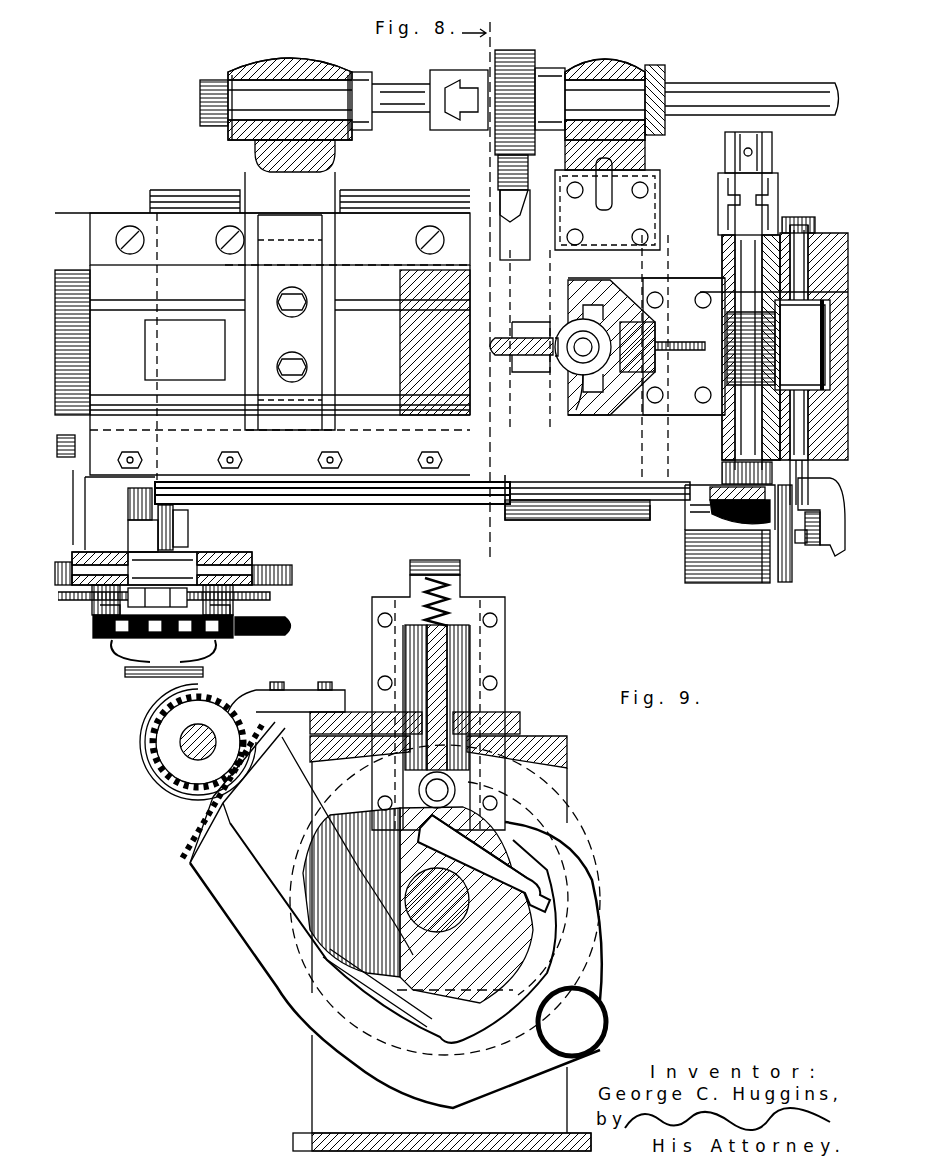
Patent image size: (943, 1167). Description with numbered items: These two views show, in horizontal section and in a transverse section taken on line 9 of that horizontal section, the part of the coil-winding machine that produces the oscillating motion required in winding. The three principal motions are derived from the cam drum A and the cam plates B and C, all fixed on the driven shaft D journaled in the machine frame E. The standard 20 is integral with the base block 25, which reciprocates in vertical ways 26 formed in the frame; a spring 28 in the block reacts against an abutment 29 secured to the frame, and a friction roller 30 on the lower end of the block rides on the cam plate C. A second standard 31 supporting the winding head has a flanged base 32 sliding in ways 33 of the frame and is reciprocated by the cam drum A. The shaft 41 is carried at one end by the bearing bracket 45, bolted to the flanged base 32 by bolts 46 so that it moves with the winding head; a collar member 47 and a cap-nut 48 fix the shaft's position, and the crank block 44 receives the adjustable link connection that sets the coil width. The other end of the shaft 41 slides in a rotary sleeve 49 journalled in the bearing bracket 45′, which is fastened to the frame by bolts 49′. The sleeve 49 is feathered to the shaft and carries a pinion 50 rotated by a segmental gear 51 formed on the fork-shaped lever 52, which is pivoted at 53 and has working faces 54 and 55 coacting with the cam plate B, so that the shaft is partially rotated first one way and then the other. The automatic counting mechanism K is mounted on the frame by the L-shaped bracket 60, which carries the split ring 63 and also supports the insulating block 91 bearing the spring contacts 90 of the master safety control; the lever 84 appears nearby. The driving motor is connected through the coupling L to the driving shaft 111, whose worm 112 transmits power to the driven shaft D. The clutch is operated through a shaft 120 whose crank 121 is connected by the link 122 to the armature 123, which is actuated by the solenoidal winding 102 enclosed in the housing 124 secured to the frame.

In FIG. 8, the section line 9— 9 is at (482, 283).
In FIG. 8, the standard 20 is at (500, 336).
In FIG. 9, the standard 20 is at (450, 644).
In FIG. 8, the base block 25 is at (606, 362).
In FIG. 9, the base block 25 is at (466, 666).
In FIG. 8, the vertical ways 26 is at (588, 316).
In FIG. 9, the vertical ways 26 is at (506, 606).
In FIG. 8, the spring 28 is at (580, 412).
In FIG. 9, the spring 28 is at (455, 590).
In FIG. 9, the abutment 29 is at (462, 568).
In FIG. 9, the friction roller 30 is at (418, 783).
In FIG. 8, the standard 31 is at (402, 297).
In FIG. 8, the flanged base 32 is at (309, 301).
In FIG. 8, the ways 33 is at (130, 296).
In FIG. 9, the ways 33 is at (520, 722).
In FIG. 8, the shaft 41 is at (388, 108).
In FIG. 9, the shaft 41 is at (192, 746).
In FIG. 8, the crank block 44 is at (456, 70).
In FIG. 8, the bearing bracket 45 is at (296, 52).
In FIG. 8, the bearing bracket 45′ is at (600, 56).
In FIG. 9, the bearing bracket 45′ is at (270, 690).
In FIG. 8, the bolts 46 is at (296, 368).
In FIG. 8, the collar member 47 is at (359, 72).
In FIG. 8, the cap-nut 48 is at (205, 96).
In FIG. 8, the rotary sleeve 49 is at (616, 96).
In FIG. 8, the bolts 49′ is at (645, 237).
In FIG. 9, the bolts 49′ is at (316, 684).
In FIG. 8, the pinion 50 is at (516, 52).
In FIG. 9, the pinion 50 is at (170, 735).
In FIG. 8, the segmental gear 51 is at (500, 178).
In FIG. 9, the segmental gear 51 is at (183, 862).
In FIG. 8, the fork-shaped lever 52 is at (515, 208).
In FIG. 9, the fork-shaped lever 52 is at (274, 996).
In FIG. 8, the pivot 53 is at (516, 524).
In FIG. 9, the pivot 53 is at (572, 1022).
In FIG. 9, the working face 54 is at (396, 1003).
In FIG. 9, the working face 55 is at (504, 830).
In FIG. 8, the L-shaped bracket 60 is at (80, 535).
In FIG. 8, the split ring 63 is at (172, 595).
In FIG. 8, the lever 84 is at (287, 618).
In FIG. 8, the spring contacts 90 is at (118, 655).
In FIG. 8, the insulating block 91 is at (94, 642).
In FIG. 8, the solenoidal winding 102 is at (730, 498).
In FIG. 8, the driving shaft 111 is at (745, 258).
In FIG. 8, the worm 112 is at (736, 332).
In FIG. 8, the shaft 120 is at (826, 232).
In FIG. 8, the crank 121 is at (823, 546).
In FIG. 8, the link 122 is at (801, 545).
In FIG. 8, the armature 123 is at (785, 585).
In FIG. 8, the housing 124 is at (730, 585).
In FIG. 8, the cam drum A is at (186, 195).
In FIG. 9, the cam drum A is at (570, 830).
In FIG. 9, the cam plate B is at (508, 898).
In FIG. 9, the cam plate C is at (366, 822).
In FIG. 9, the driven shaft D is at (456, 924).
In FIG. 8, the machine frame E is at (120, 218).
In FIG. 9, the machine frame E is at (568, 750).
In FIG. 8, the automatic counting mechanism K is at (278, 565).
In FIG. 8, the coupling L is at (759, 183).